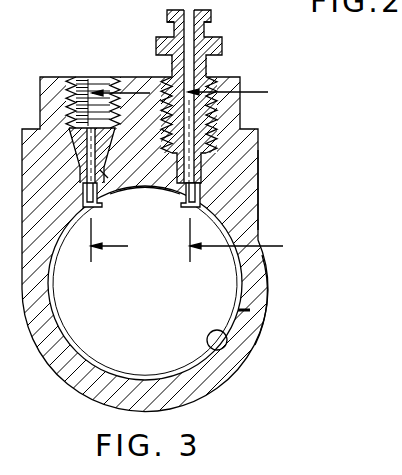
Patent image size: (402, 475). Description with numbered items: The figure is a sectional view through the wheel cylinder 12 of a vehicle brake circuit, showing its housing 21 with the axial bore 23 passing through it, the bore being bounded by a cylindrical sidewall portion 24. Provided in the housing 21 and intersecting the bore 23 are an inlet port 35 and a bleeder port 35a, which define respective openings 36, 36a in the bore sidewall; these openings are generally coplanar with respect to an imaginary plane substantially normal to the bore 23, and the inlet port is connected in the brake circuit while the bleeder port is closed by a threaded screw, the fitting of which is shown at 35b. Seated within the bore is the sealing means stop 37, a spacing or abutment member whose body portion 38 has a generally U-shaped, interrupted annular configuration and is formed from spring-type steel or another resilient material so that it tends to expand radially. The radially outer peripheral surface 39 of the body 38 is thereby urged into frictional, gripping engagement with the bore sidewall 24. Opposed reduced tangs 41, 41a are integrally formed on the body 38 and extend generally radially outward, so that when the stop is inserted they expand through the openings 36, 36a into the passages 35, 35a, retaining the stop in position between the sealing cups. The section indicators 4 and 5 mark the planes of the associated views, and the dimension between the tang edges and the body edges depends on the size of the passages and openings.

The dimension/section indicator 4 is at (120, 183).
The dimension/section indicator 5 is at (247, 168).
The wheel cylinder 12 is at (266, 131).
The housing 21 is at (257, 182).
The axial bore 23 is at (250, 352).
The cylindrical sidewall portion 24 is at (70, 348).
The inlet port 35 is at (82, 88).
The bleeder port 35a is at (208, 80).
The fitting cap 35b is at (170, 32).
The opening 36 is at (108, 178).
The opening 36a is at (185, 186).
The sealing means stop 37 is at (250, 310).
The body portion 38 is at (55, 263).
The peripheral surface 39 is at (243, 278).
The tang 41 is at (85, 198).
The tang 41a is at (198, 192).